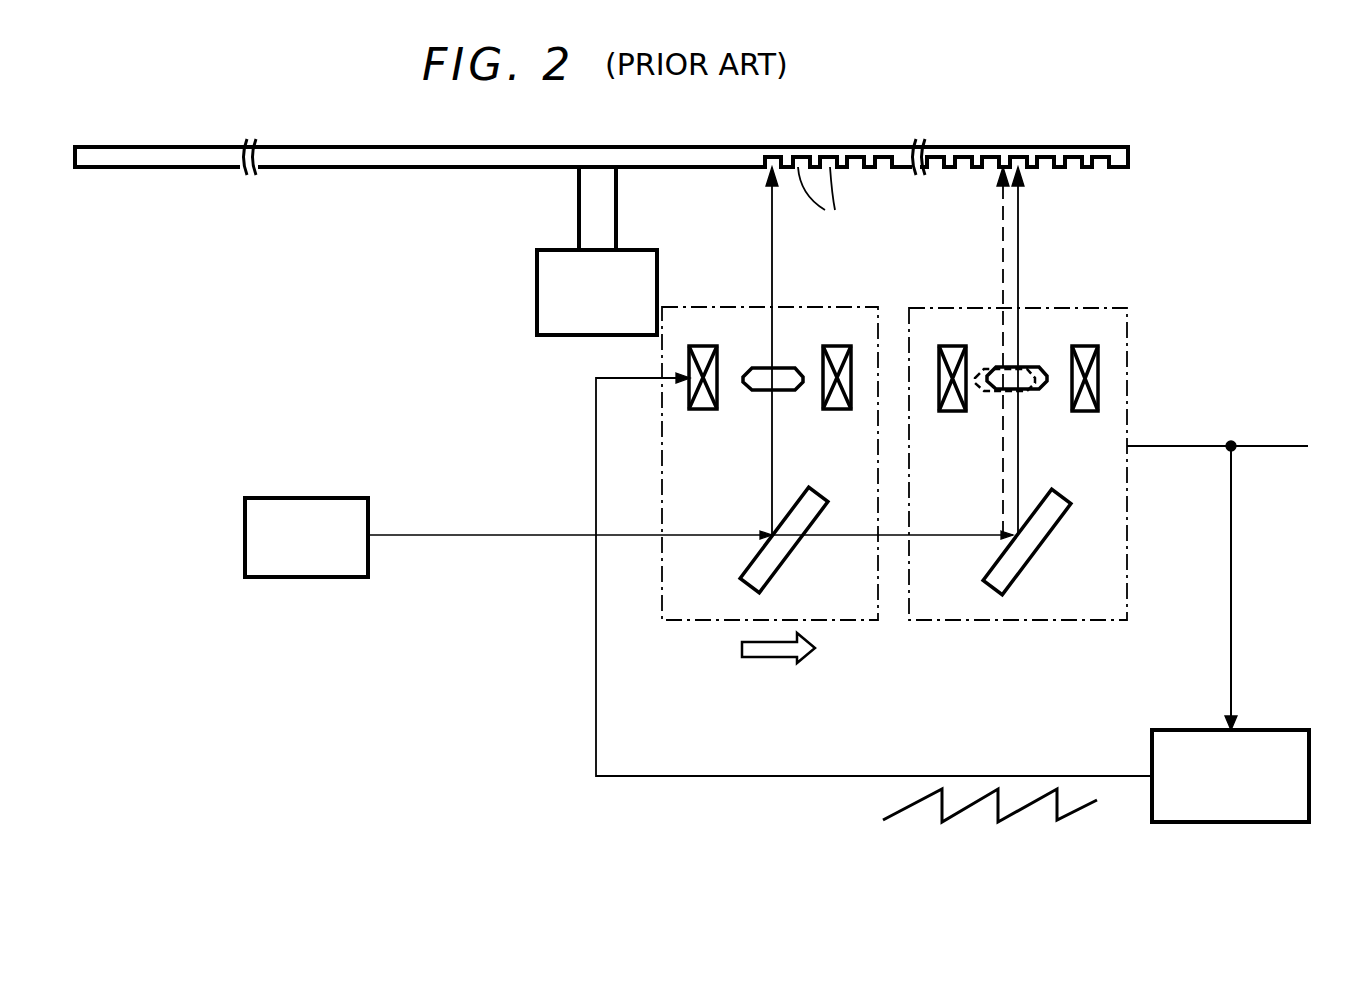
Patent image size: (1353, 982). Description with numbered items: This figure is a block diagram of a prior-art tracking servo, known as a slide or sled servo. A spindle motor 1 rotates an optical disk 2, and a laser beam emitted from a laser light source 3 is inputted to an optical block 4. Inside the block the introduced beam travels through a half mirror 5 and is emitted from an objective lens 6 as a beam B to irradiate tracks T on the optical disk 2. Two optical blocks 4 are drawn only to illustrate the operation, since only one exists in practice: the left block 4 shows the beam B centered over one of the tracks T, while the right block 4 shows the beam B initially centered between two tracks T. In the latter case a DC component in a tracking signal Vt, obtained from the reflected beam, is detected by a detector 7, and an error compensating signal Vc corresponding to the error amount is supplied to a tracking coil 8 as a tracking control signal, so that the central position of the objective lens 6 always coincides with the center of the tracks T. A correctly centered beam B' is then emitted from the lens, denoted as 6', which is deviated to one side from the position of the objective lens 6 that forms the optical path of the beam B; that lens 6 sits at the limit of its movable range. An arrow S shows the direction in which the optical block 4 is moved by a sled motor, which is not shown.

The spindle motor 1 is at (537, 315).
The optical disk 2 is at (388, 170).
The laser light source 3 is at (318, 578).
The optical block 4 is at (688, 622).
The half mirror 5 is at (776, 560).
The objective lens 6 is at (903, 423).
The objective lens 6' is at (991, 423).
The detector 7 is at (1251, 823).
The tracking coil 8 is at (703, 411).
The tracks T is at (828, 196).
The beam B is at (927, 351).
The correctly centered beam B' is at (976, 351).
The arrow S is at (783, 657).
The tracking signal Vt is at (1186, 445).
The error compensating signal Vc is at (1032, 806).